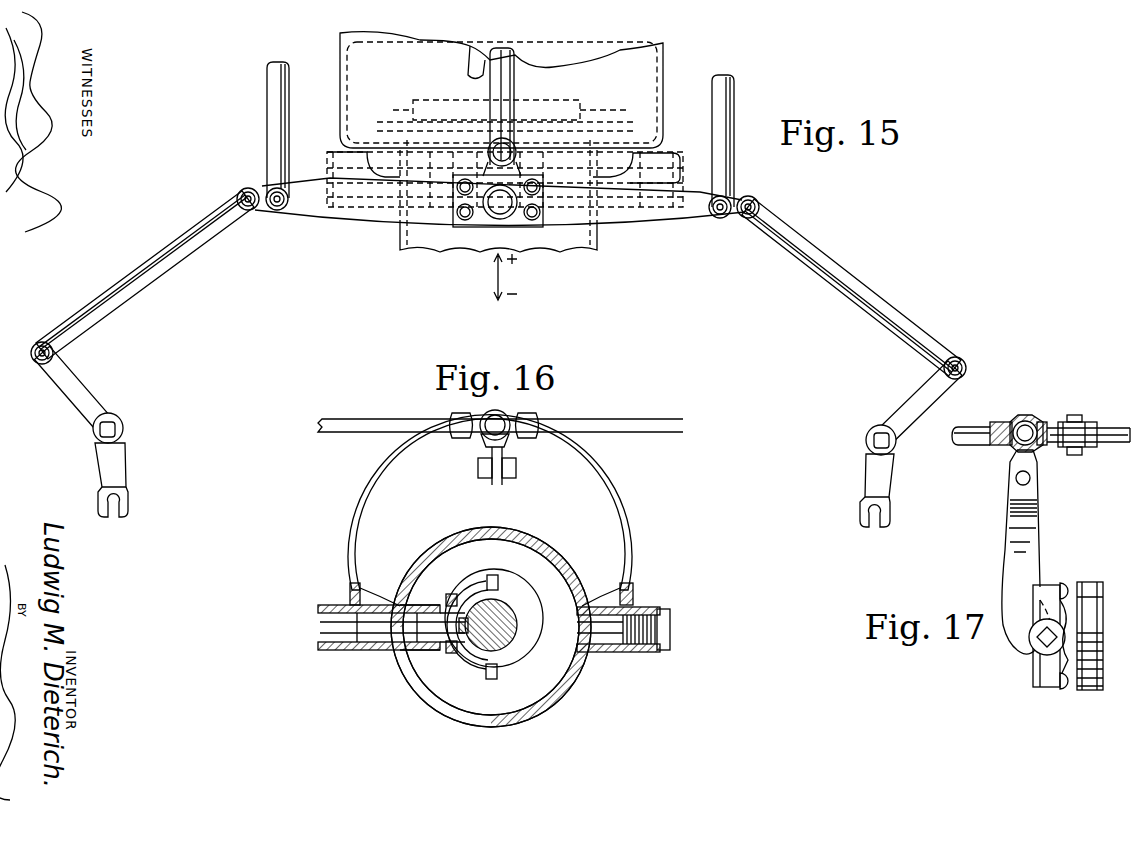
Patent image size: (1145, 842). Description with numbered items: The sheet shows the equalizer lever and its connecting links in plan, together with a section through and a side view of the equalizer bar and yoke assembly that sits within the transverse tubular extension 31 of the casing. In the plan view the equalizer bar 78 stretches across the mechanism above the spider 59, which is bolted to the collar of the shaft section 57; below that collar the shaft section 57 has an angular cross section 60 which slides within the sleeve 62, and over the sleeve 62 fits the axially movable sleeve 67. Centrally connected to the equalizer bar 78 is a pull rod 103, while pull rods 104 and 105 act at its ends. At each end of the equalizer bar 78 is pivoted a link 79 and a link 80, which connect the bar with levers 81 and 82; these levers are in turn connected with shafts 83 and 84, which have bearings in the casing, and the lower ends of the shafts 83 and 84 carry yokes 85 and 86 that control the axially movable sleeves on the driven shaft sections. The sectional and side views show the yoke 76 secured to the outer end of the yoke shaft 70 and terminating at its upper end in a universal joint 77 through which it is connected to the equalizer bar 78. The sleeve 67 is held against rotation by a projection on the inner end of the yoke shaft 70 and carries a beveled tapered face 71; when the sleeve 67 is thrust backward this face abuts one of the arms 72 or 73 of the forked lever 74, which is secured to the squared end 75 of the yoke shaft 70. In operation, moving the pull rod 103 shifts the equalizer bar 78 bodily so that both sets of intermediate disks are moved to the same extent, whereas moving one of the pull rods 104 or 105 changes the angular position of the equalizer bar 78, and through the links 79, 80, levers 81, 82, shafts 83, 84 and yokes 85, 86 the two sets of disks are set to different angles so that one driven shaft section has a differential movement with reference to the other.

In FIG. 15, the transverse tubular extension 31 is at (648, 72).
In FIG. 15, the shaft section 57 is at (478, 70).
In FIG. 15, the spider 59 is at (420, 117).
In FIG. 15, the angular cross section 60 is at (485, 237).
In FIG. 16, the angular cross section 60 is at (509, 636).
In FIG. 16, the sleeve 62 is at (523, 596).
In FIG. 15, the sleeve 67 is at (534, 137).
In FIG. 16, the sleeve 67 is at (557, 566).
In FIG. 17, the sleeve 67 is at (1084, 594).
In FIG. 16, the yoke shaft 70 is at (385, 629).
In FIG. 17, the beveled tapered face 71 is at (1057, 679).
In FIG. 16, the arm 72 is at (491, 575).
In FIG. 17, the arm 72 is at (1061, 586).
In FIG. 16, the arm 73 is at (490, 680).
In FIG. 17, the arm 73 is at (1064, 692).
In FIG. 16, the forked lever 74 is at (434, 656).
In FIG. 17, the forked lever 74 is at (1040, 663).
In FIG. 16, the squared end 75 is at (430, 620).
In FIG. 17, the squared end 75 is at (1045, 639).
In FIG. 16, the yoke 76 is at (362, 560).
In FIG. 17, the yoke 76 is at (1020, 517).
In FIG. 15, the universal joint 77 is at (507, 218).
In FIG. 16, the universal joint 77 is at (502, 419).
In FIG. 17, the universal joint 77 is at (1023, 418).
In FIG. 15, the equalizer bar 78 is at (651, 222).
In FIG. 16, the equalizer bar 78 is at (393, 429).
In FIG. 15, the link 79 is at (135, 277).
In FIG. 17, the link 79 is at (970, 442).
In FIG. 15, the link 80 is at (836, 273).
In FIG. 15, the lever 81 is at (73, 390).
In FIG. 15, the lever 82 is at (918, 396).
In FIG. 15, the shaft 83 is at (113, 428).
In FIG. 15, the shaft 84 is at (878, 441).
In FIG. 15, the yoke 85 is at (116, 469).
In FIG. 15, the yoke 86 is at (876, 476).
In FIG. 15, the pull rod 103 is at (513, 56).
In FIG. 17, the pull rod 103 is at (1108, 428).
In FIG. 15, the pull rod 104 is at (277, 126).
In FIG. 15, the pull rod 105 is at (729, 113).